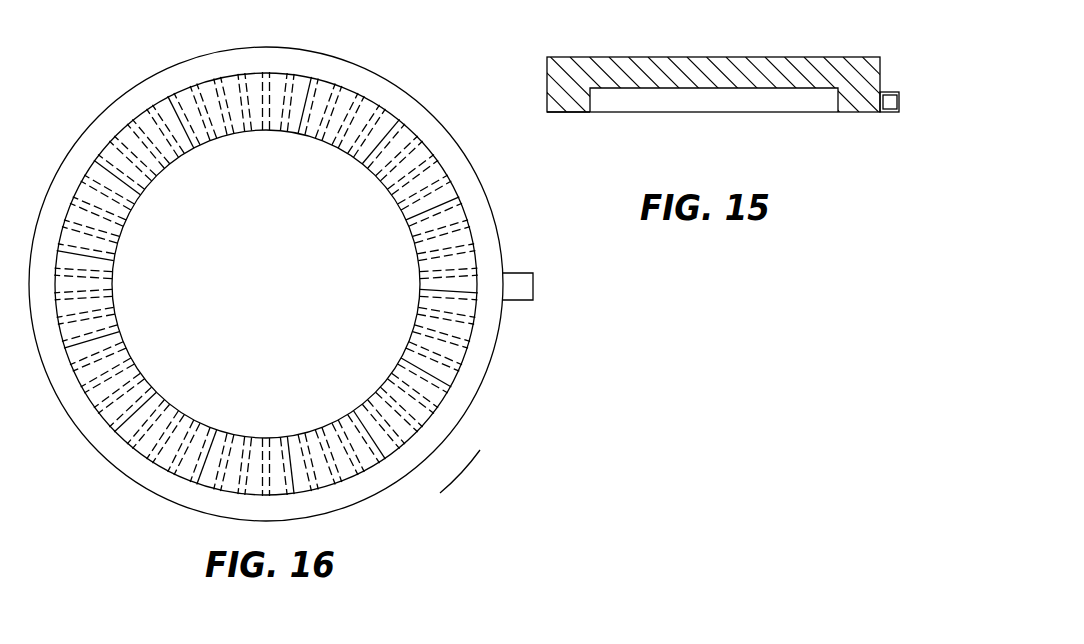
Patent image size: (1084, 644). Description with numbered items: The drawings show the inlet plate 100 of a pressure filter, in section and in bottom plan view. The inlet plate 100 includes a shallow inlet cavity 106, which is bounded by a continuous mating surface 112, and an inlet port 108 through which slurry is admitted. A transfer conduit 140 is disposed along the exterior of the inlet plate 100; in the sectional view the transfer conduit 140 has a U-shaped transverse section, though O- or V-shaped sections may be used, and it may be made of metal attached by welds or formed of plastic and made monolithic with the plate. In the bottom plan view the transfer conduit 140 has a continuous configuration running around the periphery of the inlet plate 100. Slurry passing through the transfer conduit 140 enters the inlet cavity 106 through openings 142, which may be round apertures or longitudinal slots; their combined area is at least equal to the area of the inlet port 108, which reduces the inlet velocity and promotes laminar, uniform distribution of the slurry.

In FIG. 16, the inlet plate 100 is at (167, 498).
In FIG. 15, the inlet plate 100 is at (632, 57).
In FIG. 16, the shallow inlet cavity 106 is at (227, 382).
In FIG. 15, the shallow inlet cavity 106 is at (638, 88).
In FIG. 16, the inlet port 108 is at (525, 303).
In FIG. 16, the continuous mating surface 112 is at (110, 442).
In FIG. 15, the continuous mating surface 112 is at (570, 112).
In FIG. 16, the transfer conduit 140 is at (460, 426).
In FIG. 15, the transfer conduit 140 is at (888, 112).
In FIG. 16, the openings 142 is at (413, 228).